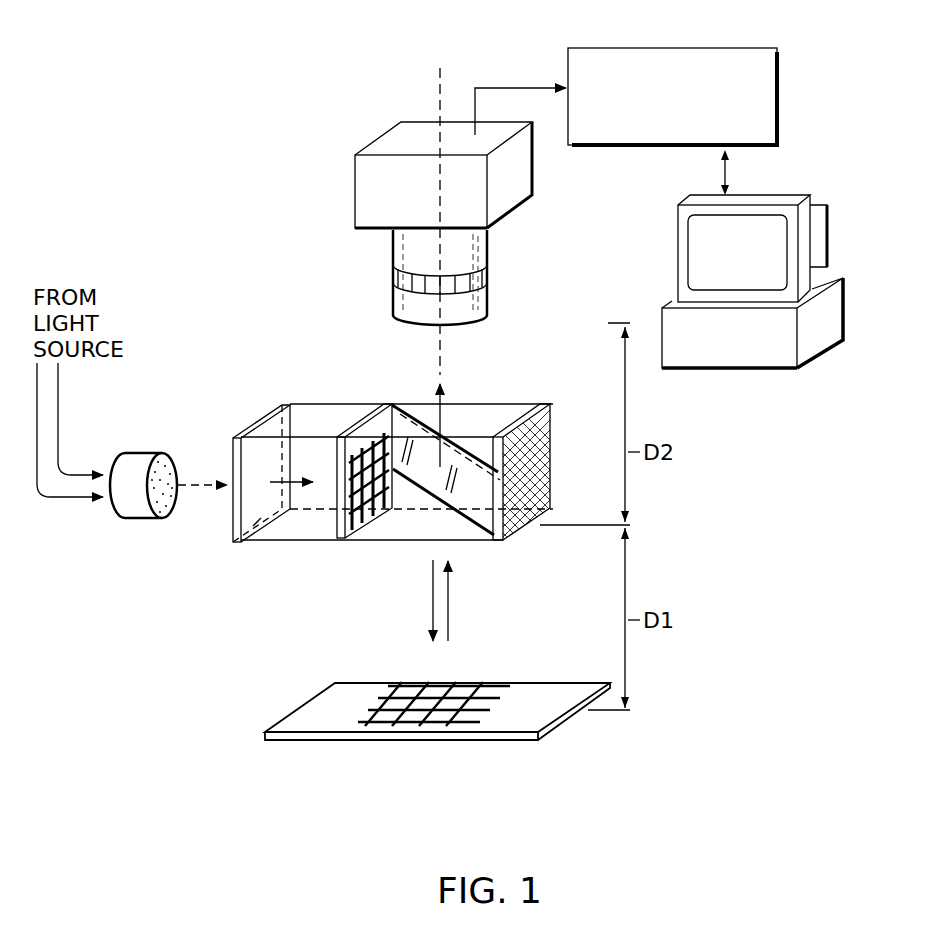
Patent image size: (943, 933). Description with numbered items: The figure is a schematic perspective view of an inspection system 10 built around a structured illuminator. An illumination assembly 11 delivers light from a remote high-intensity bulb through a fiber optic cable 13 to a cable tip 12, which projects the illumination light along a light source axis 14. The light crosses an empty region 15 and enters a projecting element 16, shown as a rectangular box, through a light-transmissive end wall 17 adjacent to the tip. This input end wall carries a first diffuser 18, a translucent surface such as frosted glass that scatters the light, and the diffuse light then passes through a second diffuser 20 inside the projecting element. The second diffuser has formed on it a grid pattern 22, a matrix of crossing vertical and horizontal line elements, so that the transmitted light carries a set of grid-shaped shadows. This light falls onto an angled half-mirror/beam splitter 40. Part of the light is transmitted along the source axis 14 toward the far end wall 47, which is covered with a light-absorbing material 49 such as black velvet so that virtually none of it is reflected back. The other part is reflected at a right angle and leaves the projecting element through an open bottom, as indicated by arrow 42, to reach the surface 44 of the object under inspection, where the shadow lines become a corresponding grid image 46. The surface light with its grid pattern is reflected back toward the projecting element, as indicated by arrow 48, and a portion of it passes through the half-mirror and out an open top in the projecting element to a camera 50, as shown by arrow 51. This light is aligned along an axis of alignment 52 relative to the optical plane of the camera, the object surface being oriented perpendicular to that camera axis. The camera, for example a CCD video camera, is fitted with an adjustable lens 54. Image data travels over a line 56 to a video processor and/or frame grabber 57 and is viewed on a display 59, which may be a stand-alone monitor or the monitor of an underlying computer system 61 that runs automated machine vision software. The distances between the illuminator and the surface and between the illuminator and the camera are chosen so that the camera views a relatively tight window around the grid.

The inspection system 10 is at (407, 50).
The illumination assembly 11 is at (217, 393).
The cable tip 12 is at (134, 500).
The fiber optic cable 13 is at (143, 451).
The light source axis 14 is at (178, 487).
The empty region 15 is at (217, 466).
The projecting element 16 is at (409, 484).
The light-transmissive end wall 17 is at (248, 412).
The first diffuser 18 is at (256, 522).
The second diffuser 20 is at (349, 541).
The grid pattern 22 is at (369, 496).
The half-mirror/beam splitter 40 is at (470, 497).
The reflected light arrow 42 is at (430, 608).
The object surface 44 is at (438, 697).
The grid image 46 is at (447, 678).
The far end wall 47 is at (547, 404).
The surface reflected light arrow 48 is at (450, 608).
The light-absorbing material 49 is at (536, 452).
The camera 50 is at (527, 172).
The camera light arrow 51 is at (445, 388).
The axis of alignment 52 is at (437, 361).
The lens 54 is at (415, 312).
The line 56 is at (512, 86).
The video processor and/or frame grabber 57 is at (592, 58).
The display 59 is at (778, 240).
The computer system 61 is at (832, 307).